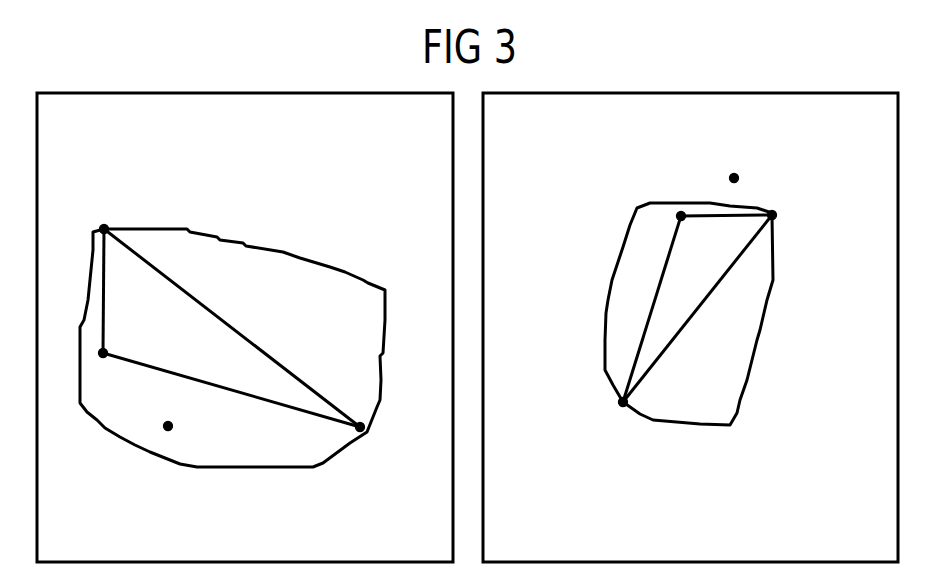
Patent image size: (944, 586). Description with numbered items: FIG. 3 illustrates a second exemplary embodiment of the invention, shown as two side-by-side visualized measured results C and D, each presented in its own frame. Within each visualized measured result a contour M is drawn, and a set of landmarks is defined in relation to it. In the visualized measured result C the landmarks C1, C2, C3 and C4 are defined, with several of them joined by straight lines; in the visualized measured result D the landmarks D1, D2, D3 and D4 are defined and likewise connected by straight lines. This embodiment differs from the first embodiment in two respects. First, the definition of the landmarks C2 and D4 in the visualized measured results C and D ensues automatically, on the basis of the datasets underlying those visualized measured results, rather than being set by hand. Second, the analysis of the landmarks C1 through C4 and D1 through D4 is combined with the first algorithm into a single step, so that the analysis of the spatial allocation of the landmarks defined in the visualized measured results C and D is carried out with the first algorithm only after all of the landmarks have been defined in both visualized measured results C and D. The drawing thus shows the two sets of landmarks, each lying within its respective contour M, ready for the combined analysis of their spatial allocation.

The visualized measured result C is at (245, 327).
The visualized measured result D is at (690, 327).
The mask / region contour M is at (282, 248).
The landmark C1 is at (361, 431).
The landmark C2 is at (103, 226).
The landmark C3 is at (174, 426).
The landmark C4 is at (106, 350).
The landmark D1 is at (623, 408).
The landmark D2 is at (733, 173).
The landmark D3 is at (680, 211).
The landmark D4 is at (778, 216).